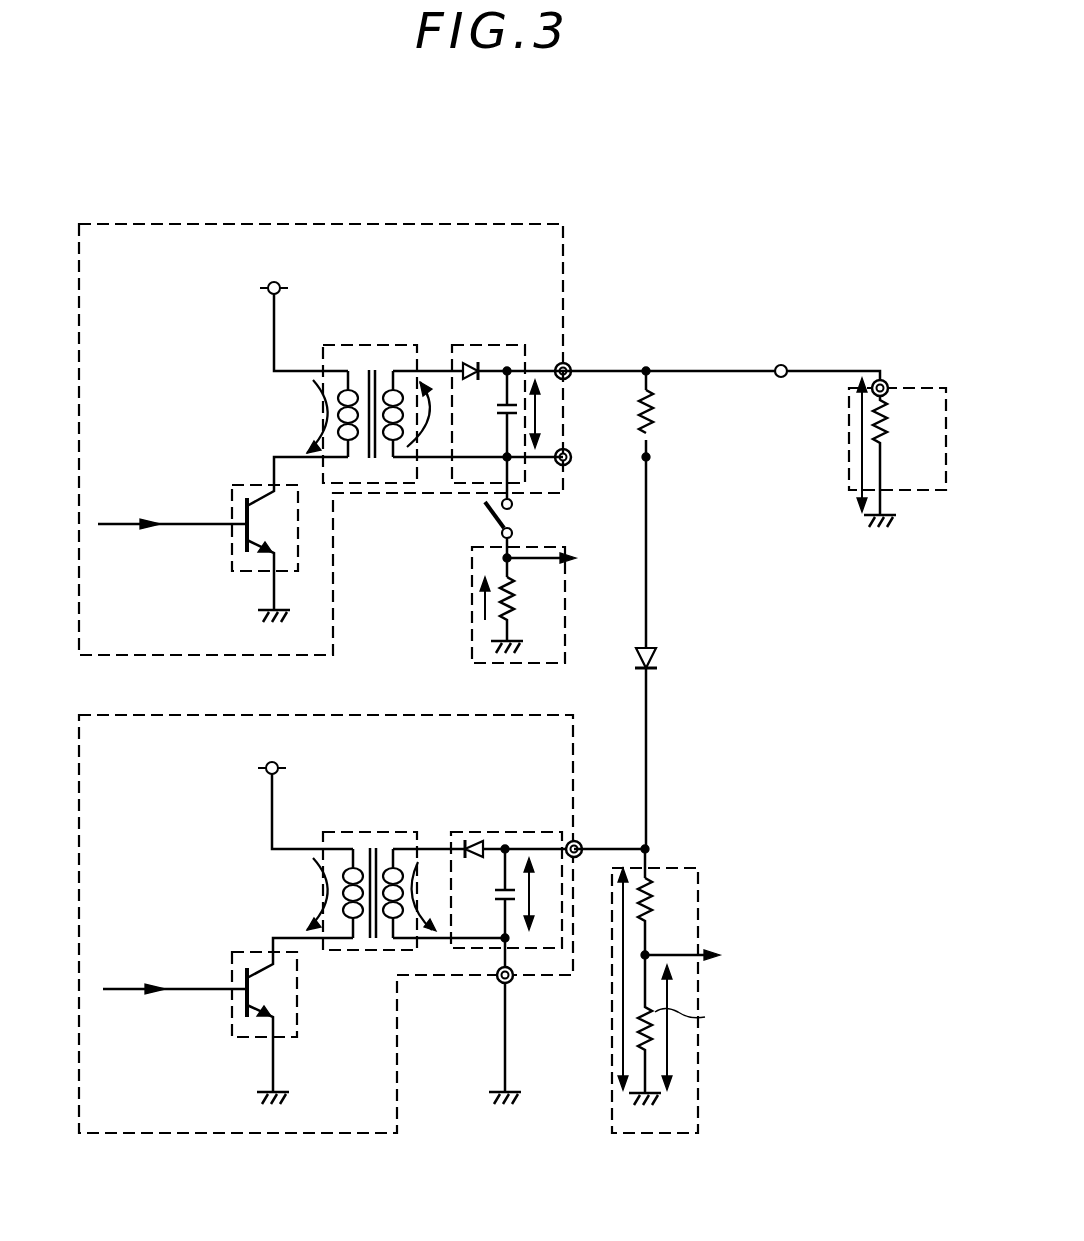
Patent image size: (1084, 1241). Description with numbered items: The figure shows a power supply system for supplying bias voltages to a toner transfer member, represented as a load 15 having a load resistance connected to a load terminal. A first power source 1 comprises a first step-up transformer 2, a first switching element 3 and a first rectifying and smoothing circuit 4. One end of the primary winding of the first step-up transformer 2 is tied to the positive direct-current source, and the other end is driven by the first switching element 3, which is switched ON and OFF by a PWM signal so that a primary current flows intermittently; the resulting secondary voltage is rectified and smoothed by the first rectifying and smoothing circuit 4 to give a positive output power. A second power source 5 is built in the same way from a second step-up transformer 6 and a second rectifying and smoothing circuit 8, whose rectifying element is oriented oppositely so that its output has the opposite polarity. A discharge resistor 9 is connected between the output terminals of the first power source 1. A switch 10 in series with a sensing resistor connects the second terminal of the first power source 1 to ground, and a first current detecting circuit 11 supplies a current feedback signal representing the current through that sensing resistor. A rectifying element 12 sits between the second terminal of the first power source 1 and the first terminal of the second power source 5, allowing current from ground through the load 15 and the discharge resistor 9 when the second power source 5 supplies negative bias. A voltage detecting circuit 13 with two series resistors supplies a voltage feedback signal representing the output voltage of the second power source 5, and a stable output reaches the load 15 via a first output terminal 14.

The first power source 1 is at (245, 222).
The first step-up transformer 2 is at (347, 342).
The first switching element 3 is at (243, 484).
The first rectifying and smoothing circuit 4 is at (492, 342).
The second power source 5 is at (270, 713).
The second step-up transformer 6 is at (337, 830).
The second rectifying and smoothing circuit 8 is at (525, 830).
The discharge resistor 9 is at (660, 432).
The switch 10 is at (484, 521).
The first current detecting circuit 11 is at (568, 646).
The rectifying element 12 is at (652, 660).
The voltage detecting circuit 13 is at (700, 1098).
The first output terminal 14 is at (781, 364).
The load 15 is at (930, 385).